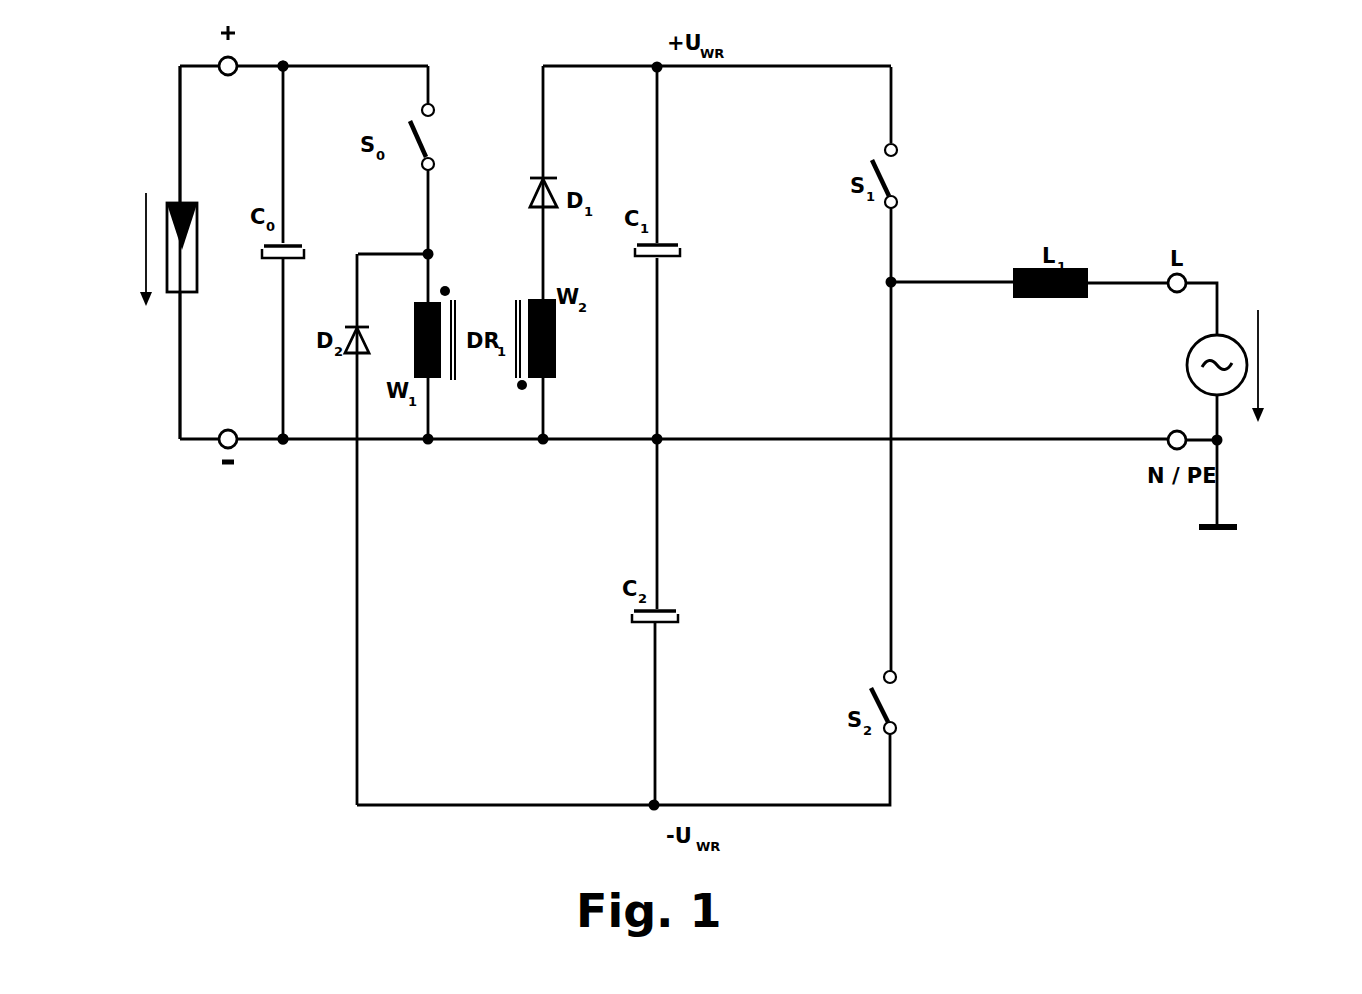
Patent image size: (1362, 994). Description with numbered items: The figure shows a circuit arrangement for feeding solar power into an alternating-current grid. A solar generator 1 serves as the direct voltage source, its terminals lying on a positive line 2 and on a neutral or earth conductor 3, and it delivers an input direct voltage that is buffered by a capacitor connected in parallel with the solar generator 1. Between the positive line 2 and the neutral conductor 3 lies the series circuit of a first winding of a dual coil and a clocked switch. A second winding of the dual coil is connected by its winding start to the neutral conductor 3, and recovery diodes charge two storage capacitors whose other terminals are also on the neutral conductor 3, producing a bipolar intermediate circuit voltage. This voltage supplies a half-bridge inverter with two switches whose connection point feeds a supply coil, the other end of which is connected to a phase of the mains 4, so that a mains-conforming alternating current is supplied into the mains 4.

The solar generator 1 is at (199, 247).
The positive line 2 is at (296, 57).
The neutral or earth conductor 3 is at (289, 452).
The mains 4 is at (1180, 372).